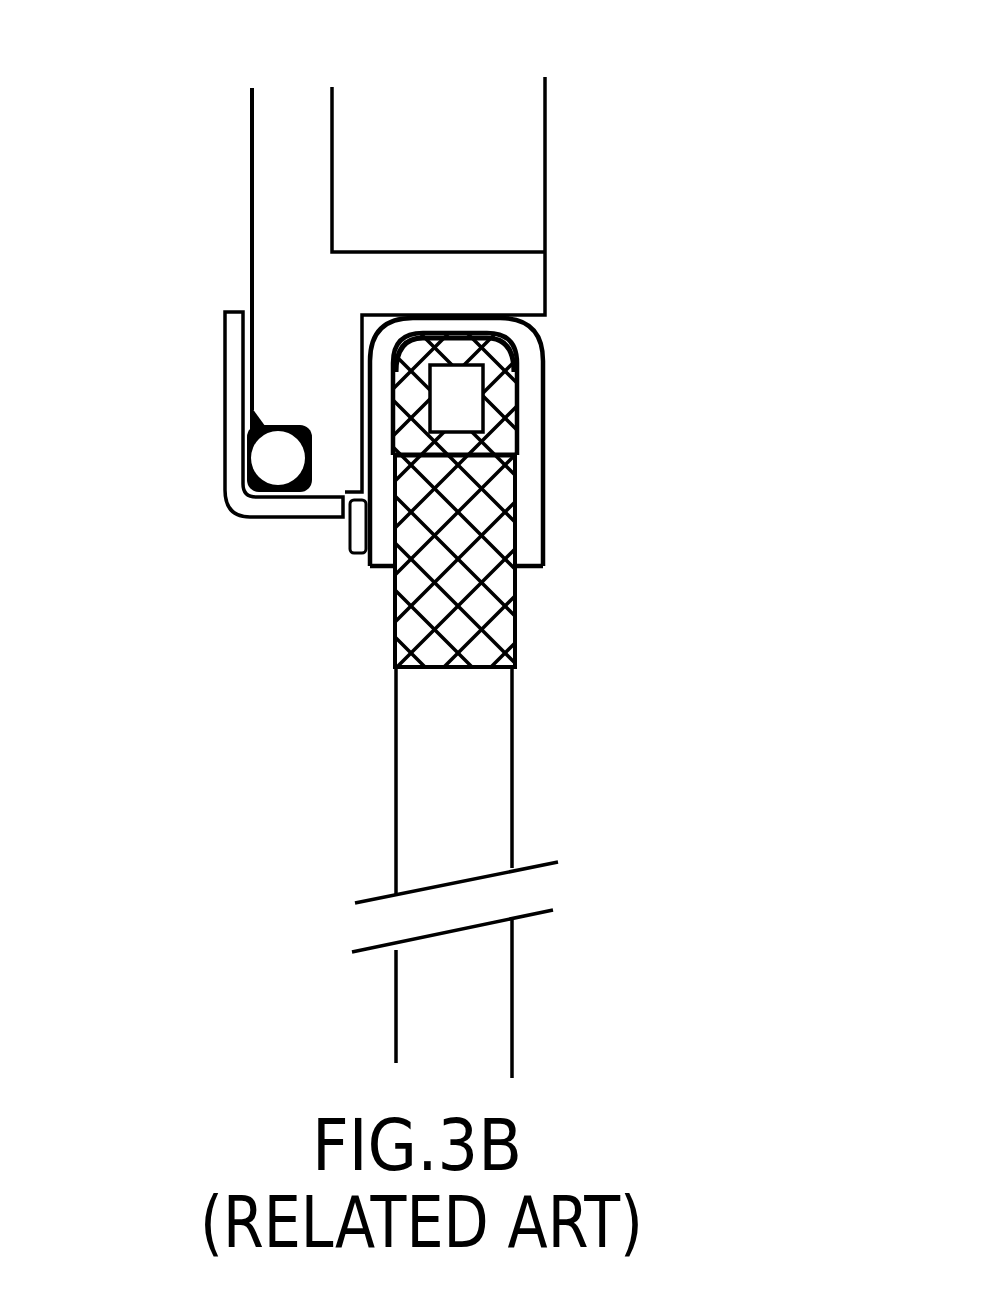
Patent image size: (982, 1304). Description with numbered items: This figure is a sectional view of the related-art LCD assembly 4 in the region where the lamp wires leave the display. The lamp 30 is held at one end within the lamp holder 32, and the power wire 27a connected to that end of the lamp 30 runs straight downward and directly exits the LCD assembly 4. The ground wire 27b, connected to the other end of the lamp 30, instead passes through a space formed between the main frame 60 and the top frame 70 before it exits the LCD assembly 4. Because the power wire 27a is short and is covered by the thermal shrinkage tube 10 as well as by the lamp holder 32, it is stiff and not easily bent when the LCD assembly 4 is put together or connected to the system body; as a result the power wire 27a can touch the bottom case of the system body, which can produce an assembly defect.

The LCD assembly 4 is at (708, 83).
The main frame 60 is at (288, 152).
The top frame 70 is at (237, 343).
The ground wire 27b is at (267, 450).
The lamp holder 32 is at (380, 545).
The lamp 30 is at (510, 385).
The thermal shrinkage tube 10 is at (417, 622).
The power wire 27a is at (413, 817).